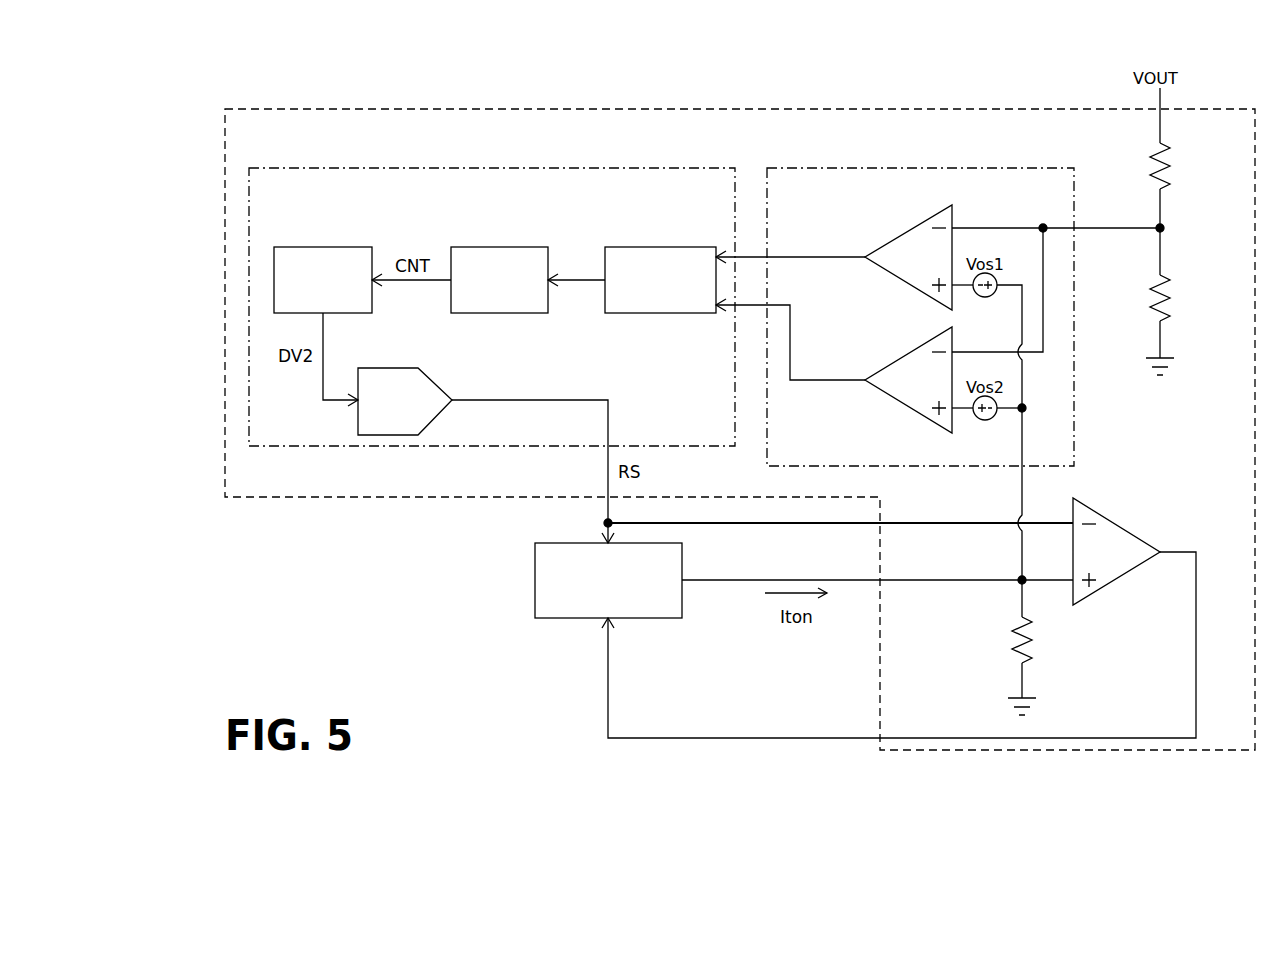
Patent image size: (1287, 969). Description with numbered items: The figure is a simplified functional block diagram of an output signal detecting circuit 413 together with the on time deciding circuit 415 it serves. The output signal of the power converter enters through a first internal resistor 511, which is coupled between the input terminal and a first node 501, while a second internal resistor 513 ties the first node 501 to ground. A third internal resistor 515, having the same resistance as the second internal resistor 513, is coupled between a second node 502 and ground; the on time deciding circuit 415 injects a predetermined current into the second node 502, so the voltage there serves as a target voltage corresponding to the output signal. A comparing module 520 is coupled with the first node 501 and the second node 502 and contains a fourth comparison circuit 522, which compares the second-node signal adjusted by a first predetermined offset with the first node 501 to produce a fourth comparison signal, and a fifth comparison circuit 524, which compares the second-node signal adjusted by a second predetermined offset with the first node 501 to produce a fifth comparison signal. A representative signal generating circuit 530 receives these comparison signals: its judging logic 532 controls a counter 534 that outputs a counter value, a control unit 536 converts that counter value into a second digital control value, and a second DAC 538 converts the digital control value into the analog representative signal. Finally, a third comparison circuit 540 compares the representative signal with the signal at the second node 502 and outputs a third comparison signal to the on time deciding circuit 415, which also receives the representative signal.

The output signal detecting circuit 413 is at (331, 72).
The representative signal generating circuit 530 is at (492, 168).
The comparing module 520 is at (918, 168).
The control unit 536 is at (323, 247).
The counter 534 is at (500, 247).
The judging logic 532 is at (660, 247).
The second DAC 538 is at (388, 368).
The fourth comparison circuit 522 is at (910, 227).
The fifth comparison circuit 524 is at (910, 407).
The first node 501 is at (1158, 223).
The first internal resistor 511 is at (1175, 167).
The second internal resistor 513 is at (1175, 298).
The second node 502 is at (1018, 577).
The third internal resistor 515 is at (1010, 640).
The third comparison circuit 540 is at (1117, 520).
The on time deciding circuit 415 is at (580, 618).